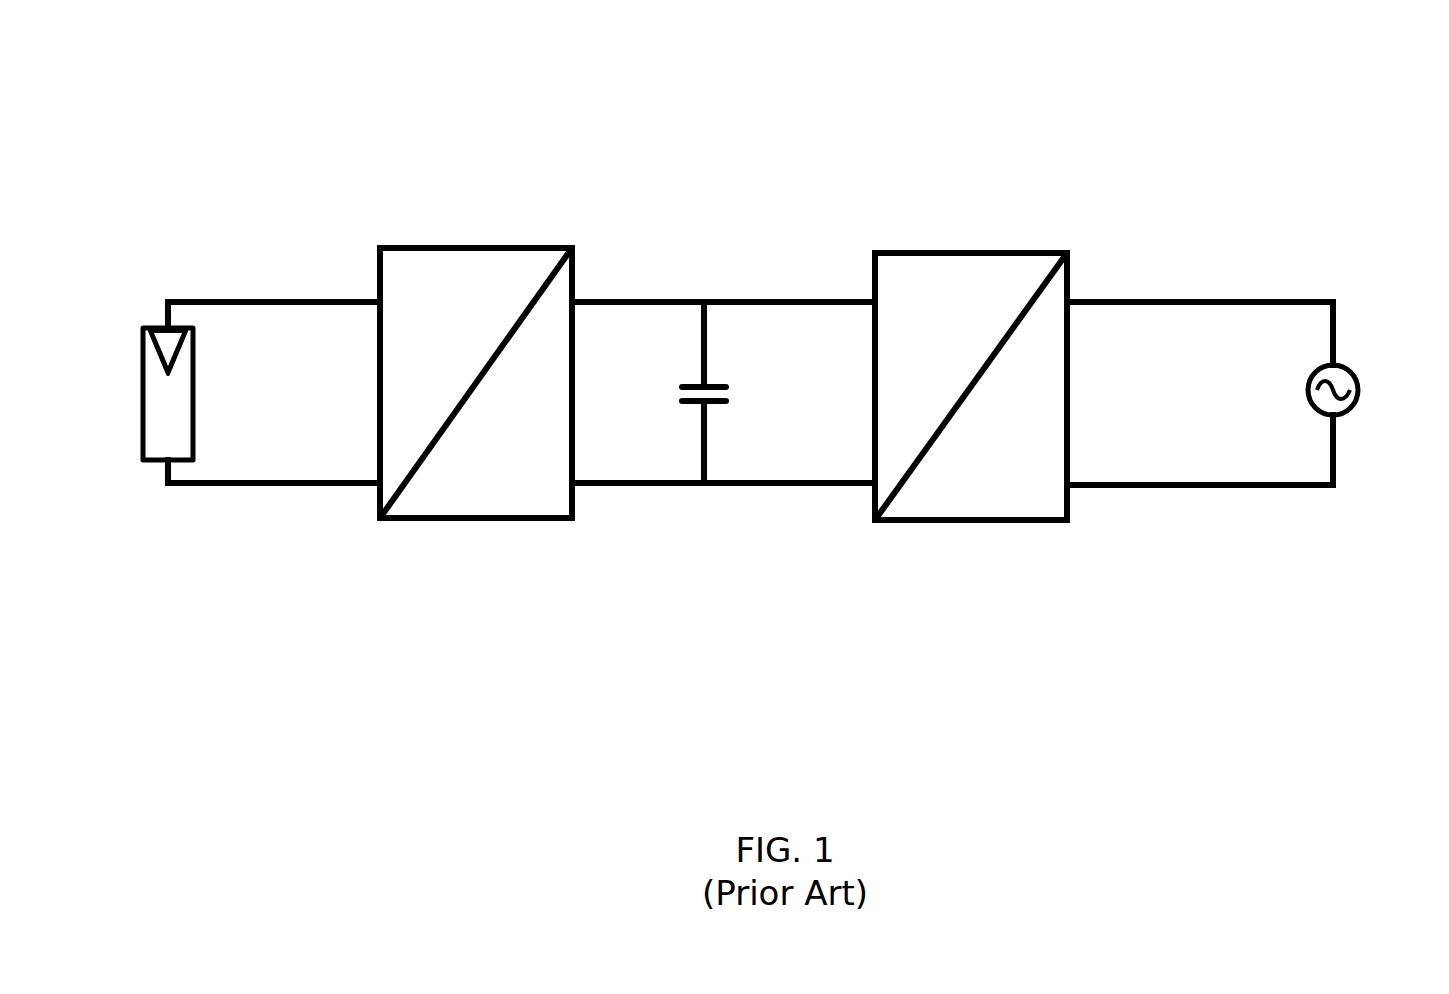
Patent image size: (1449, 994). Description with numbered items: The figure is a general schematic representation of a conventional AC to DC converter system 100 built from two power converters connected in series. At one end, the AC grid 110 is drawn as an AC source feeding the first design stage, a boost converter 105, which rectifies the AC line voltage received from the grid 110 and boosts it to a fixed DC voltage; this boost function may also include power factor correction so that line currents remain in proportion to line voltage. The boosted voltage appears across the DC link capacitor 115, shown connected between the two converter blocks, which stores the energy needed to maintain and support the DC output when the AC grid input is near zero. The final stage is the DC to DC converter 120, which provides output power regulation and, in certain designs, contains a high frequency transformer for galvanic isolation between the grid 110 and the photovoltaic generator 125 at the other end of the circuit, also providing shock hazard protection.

The power conversion system 100 is at (1156, 135).
The boost converter 105 is at (961, 231).
The grid 110 is at (1378, 386).
The DC link capacitor 115 is at (668, 396).
The DC to DC converter 120 is at (497, 225).
The Photovoltaic (PV) Generator 125 is at (126, 394).